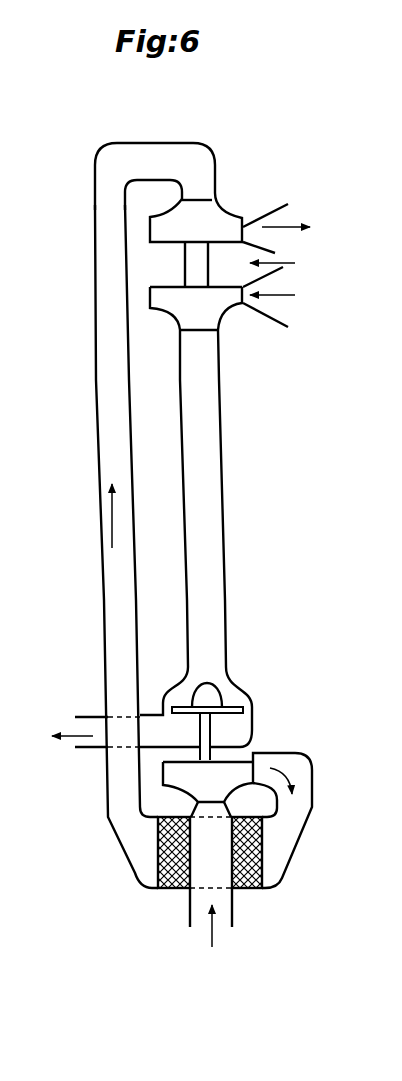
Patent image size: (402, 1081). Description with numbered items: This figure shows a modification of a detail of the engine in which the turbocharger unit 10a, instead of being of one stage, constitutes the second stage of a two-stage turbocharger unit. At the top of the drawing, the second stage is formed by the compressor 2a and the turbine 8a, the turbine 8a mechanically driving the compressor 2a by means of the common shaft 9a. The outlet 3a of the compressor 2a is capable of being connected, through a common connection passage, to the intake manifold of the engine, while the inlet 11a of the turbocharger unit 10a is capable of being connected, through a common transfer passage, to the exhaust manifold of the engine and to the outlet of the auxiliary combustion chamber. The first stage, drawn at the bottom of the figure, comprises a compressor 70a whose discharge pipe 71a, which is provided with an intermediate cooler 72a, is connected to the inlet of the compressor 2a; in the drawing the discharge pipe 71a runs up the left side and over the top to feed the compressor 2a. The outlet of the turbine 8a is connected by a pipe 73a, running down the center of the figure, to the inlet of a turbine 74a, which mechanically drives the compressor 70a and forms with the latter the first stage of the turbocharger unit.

The compressor 2a is at (222, 212).
The outlet 3a is at (243, 218).
The turbine 8a is at (212, 315).
The common shaft 9a is at (200, 270).
The turbocharger unit 10a is at (293, 265).
The inlet 11a is at (293, 297).
The compressor 70a is at (230, 760).
The discharge pipe 71a is at (110, 633).
The intermediate cooler 72a is at (163, 857).
The pipe 73a is at (212, 545).
The turbine 74a is at (252, 700).